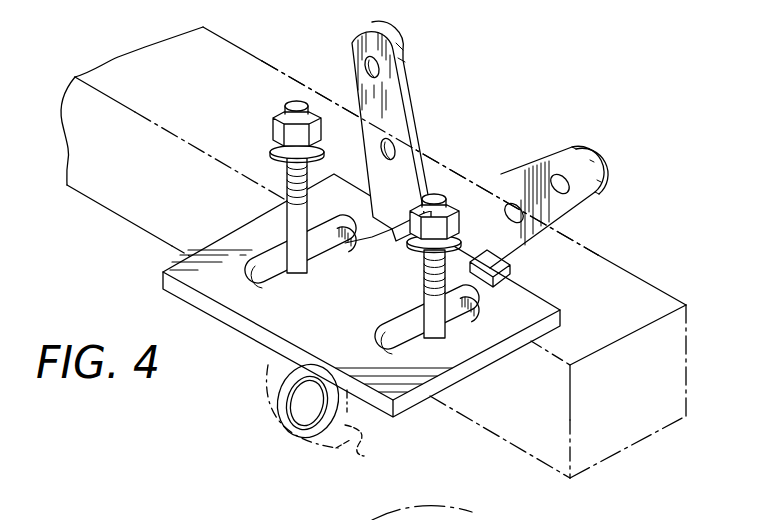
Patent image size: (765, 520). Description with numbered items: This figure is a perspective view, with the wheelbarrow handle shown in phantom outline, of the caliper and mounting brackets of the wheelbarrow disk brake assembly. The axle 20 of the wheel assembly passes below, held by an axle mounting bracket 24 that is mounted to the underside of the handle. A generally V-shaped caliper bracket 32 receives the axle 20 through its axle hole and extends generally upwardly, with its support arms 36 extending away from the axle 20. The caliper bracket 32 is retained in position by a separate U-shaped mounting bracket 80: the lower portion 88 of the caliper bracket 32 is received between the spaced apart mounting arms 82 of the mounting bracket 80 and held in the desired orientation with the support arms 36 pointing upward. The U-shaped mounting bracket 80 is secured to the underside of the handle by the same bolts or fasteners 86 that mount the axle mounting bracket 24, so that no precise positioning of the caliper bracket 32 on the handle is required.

The axle 20 is at (298, 400).
The axle mounting bracket 24 is at (367, 448).
The caliper bracket 32 is at (420, 106).
The support arm 36 is at (399, 52).
The U-shaped mounting bracket 80 is at (397, 295).
The mounting arm 82 is at (261, 237).
The bolt or fastener 86 is at (296, 104).
The lower portion 88 is at (494, 266).